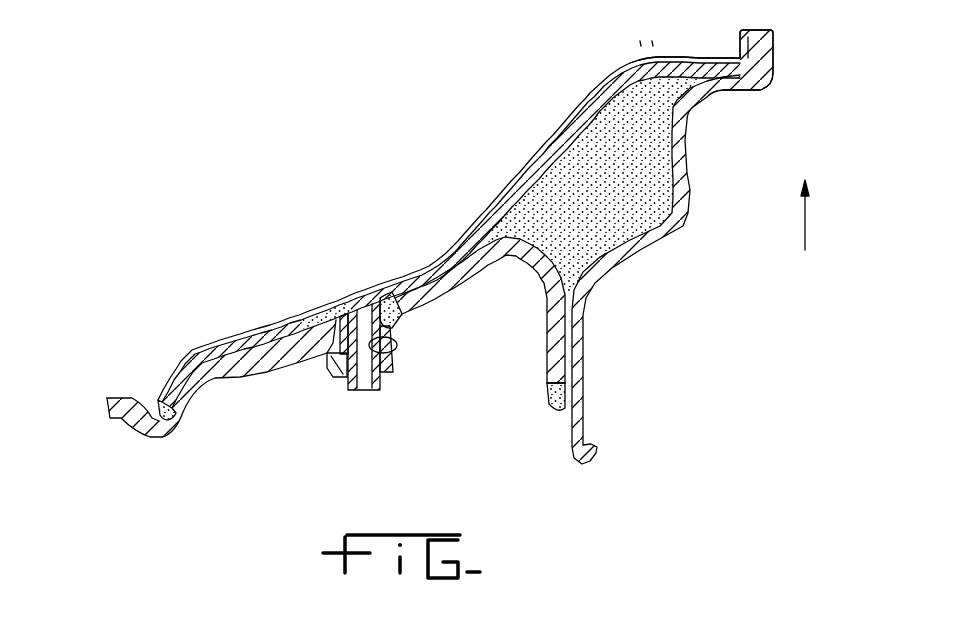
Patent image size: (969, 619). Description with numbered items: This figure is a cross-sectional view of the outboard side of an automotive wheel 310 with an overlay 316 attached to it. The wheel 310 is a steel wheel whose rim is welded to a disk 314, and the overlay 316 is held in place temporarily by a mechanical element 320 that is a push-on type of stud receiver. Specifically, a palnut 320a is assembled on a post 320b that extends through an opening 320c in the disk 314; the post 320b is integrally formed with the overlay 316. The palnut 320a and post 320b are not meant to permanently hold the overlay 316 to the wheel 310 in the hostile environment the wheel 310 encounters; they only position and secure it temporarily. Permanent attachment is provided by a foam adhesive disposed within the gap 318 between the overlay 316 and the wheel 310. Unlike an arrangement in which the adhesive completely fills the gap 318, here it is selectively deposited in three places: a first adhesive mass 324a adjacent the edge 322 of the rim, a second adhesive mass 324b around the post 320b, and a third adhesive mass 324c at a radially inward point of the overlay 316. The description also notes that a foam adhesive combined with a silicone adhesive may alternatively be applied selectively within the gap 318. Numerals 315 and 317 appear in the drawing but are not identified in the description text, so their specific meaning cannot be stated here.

The wheel 310 is at (313, 171).
The disk 314 is at (248, 378).
The disc wall 315 is at (583, 410).
The overlay 316 is at (430, 262).
The bead seat 317 is at (697, 58).
The gap 318 is at (473, 235).
The mechanical element 320 is at (393, 344).
The palnut 320a is at (322, 375).
The post 320b is at (338, 312).
The opening 320c is at (390, 375).
The edge of the rim 322 is at (770, 48).
The first adhesive mass 324a is at (593, 157).
The second adhesive mass 324b is at (402, 300).
The third adhesive mass 324c is at (181, 356).